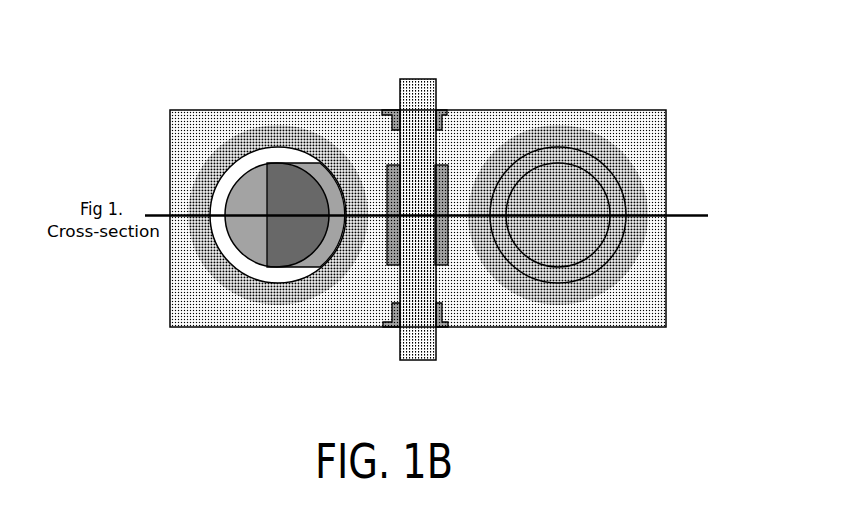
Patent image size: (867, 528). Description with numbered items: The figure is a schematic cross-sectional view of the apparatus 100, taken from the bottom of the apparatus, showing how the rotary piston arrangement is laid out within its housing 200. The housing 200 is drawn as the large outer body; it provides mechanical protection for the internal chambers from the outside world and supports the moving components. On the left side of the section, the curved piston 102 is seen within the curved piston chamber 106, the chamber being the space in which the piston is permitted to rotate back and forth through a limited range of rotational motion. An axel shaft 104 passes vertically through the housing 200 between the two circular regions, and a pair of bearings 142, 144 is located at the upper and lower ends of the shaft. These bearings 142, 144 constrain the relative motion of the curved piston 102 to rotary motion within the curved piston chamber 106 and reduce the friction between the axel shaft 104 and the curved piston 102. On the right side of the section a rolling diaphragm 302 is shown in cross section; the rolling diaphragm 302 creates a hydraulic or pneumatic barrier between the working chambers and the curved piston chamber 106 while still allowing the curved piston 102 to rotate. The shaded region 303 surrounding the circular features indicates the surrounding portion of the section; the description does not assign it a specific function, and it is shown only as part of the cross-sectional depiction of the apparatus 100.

The device assembly 100 is at (108, 343).
The curved piston 102 is at (258, 183).
The axel shaft 104 is at (420, 86).
The curved piston chamber 106 is at (265, 270).
The bearing 142 is at (442, 115).
The bearing 144 is at (393, 323).
The housing 200 is at (645, 310).
The rolling diaphragm 302 is at (572, 192).
The surrounding halo region 303 is at (263, 130).